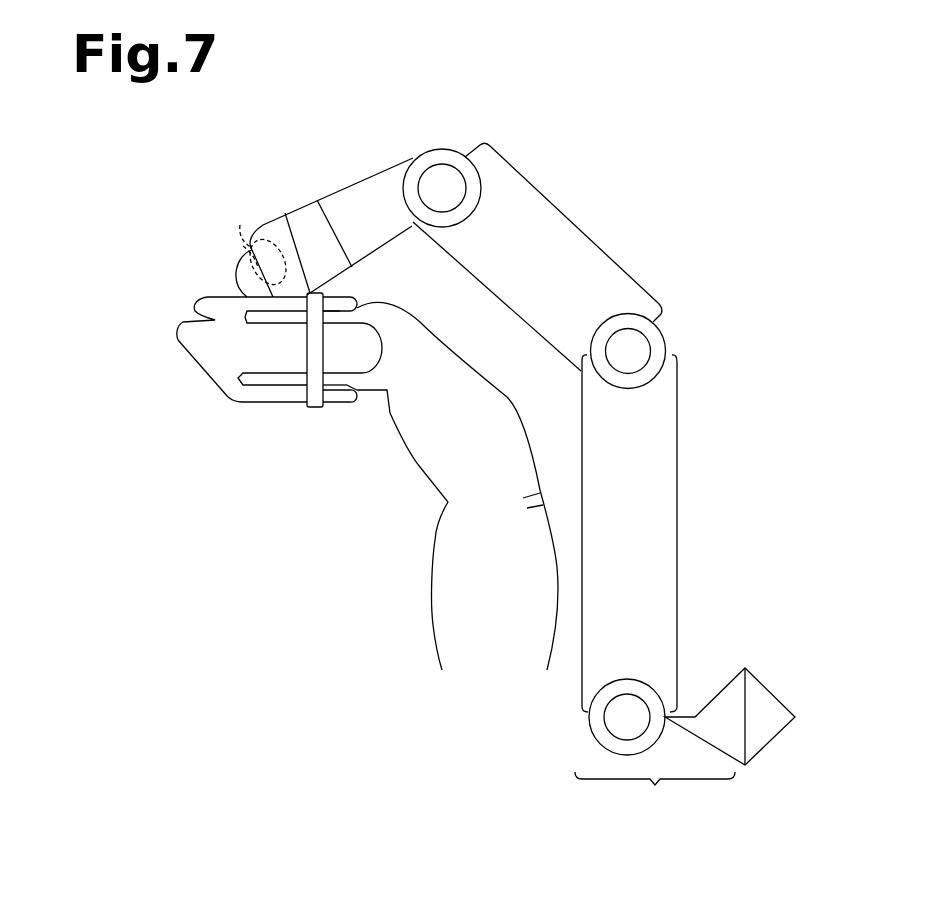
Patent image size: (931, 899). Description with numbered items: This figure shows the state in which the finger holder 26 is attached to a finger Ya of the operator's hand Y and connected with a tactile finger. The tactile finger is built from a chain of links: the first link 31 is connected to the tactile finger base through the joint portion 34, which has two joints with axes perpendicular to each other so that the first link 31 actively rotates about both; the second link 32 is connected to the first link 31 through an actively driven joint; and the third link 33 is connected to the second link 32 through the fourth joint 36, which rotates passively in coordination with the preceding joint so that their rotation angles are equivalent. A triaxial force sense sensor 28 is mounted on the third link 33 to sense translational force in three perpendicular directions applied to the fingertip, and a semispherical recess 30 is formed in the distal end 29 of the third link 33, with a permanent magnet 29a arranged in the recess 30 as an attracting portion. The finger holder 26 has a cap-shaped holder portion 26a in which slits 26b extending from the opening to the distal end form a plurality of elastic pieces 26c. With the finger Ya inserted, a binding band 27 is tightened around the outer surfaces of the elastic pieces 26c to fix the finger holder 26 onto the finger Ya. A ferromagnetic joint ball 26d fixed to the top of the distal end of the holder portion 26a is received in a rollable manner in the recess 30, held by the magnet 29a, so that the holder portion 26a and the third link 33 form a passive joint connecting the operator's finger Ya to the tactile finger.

The finger holder 26 is at (210, 373).
The holder portion 26a is at (198, 348).
The slits 26b is at (260, 388).
The elastic pieces 26c is at (347, 293).
The joint ball 26d is at (232, 264).
The binding band 27 is at (315, 407).
The triaxial force sense sensor 28 is at (305, 202).
The distal end 29 is at (275, 213).
The permanent magnet 29a is at (257, 230).
The recess 30 is at (242, 245).
The first link 31 is at (670, 440).
The second link 32 is at (550, 205).
The third link 33 is at (363, 178).
The joint portion 34 is at (685, 743).
The fourth joint 36 is at (443, 150).
The hand Y is at (442, 588).
The finger Ya is at (378, 306).